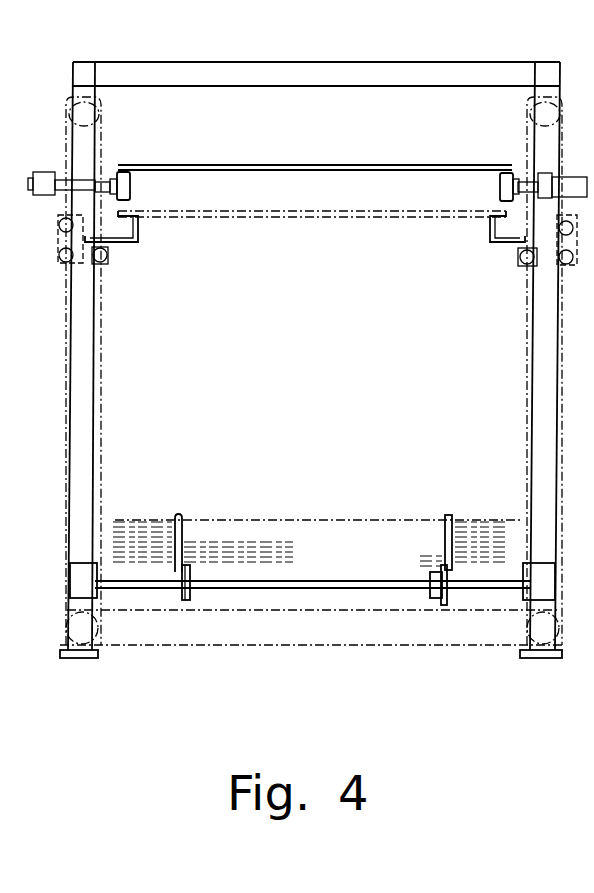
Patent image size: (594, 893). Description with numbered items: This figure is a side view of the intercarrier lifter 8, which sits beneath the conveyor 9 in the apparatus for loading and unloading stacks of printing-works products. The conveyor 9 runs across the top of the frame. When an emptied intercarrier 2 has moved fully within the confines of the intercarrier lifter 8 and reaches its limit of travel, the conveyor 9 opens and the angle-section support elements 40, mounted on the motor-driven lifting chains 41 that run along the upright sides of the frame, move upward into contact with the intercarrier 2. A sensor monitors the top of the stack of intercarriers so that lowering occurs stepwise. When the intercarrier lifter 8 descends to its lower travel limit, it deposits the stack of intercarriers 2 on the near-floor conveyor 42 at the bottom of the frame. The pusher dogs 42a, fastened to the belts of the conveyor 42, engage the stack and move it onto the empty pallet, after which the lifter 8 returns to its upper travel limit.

The intercarrier 2 is at (290, 165).
The intercarrier lifter 8 is at (300, 230).
The conveyor 9 is at (125, 168).
The angle-section support element 40 is at (141, 243).
The lifting chain 41 is at (66, 355).
The near-floor conveyor 42 is at (188, 600).
The pusher dog 42a is at (181, 521).